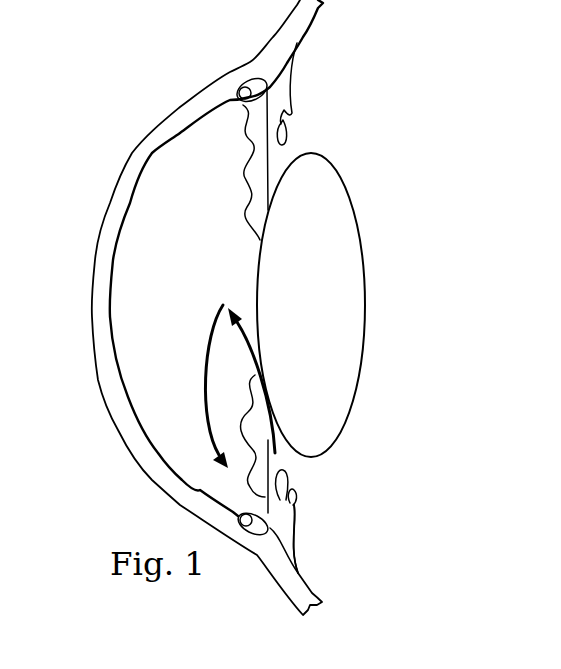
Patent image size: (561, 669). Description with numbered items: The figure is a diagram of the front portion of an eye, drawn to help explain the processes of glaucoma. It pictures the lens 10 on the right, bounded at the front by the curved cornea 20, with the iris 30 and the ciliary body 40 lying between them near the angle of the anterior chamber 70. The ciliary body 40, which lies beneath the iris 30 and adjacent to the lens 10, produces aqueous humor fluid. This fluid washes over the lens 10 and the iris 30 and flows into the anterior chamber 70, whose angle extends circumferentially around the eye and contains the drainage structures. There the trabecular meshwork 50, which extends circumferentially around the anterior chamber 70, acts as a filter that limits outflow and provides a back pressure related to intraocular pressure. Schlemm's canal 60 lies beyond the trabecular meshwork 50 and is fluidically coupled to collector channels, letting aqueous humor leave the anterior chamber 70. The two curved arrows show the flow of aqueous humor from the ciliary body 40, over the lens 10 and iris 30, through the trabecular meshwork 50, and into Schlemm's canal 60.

The lens 10 is at (354, 393).
The cornea 20 is at (112, 195).
The iris 30 is at (242, 180).
The ciliary body 40 is at (290, 136).
The trabecular meshwork 50 is at (247, 100).
The Schlemm's canal 60 is at (252, 74).
The anterior chamber 70 is at (200, 282).